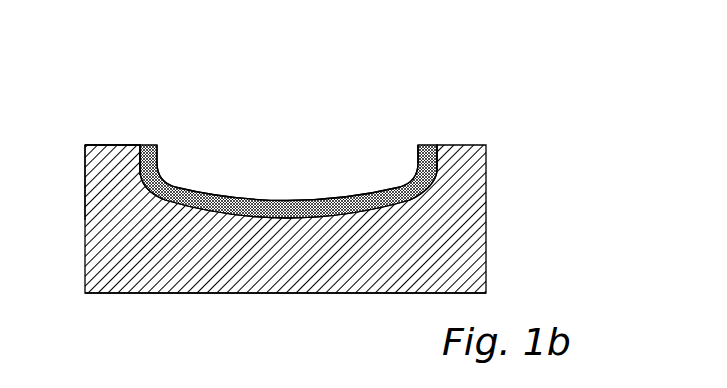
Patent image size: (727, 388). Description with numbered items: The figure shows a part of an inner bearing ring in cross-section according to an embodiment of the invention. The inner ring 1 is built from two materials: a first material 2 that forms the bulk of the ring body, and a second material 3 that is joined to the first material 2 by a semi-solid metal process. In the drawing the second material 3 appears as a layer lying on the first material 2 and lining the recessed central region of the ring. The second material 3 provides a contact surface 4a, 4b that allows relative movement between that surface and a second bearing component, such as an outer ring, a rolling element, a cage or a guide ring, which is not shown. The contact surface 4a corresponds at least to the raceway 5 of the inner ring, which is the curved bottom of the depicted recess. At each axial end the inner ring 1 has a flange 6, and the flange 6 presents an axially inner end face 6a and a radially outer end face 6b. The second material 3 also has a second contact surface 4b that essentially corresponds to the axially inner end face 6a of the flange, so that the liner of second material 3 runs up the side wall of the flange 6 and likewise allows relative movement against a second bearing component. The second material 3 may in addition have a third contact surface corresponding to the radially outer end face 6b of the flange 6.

The inner ring 1 is at (275, 185).
The first material 2 is at (468, 223).
The second material 3 is at (267, 218).
The contact surface 4a is at (188, 190).
The second contact surface 4b is at (418, 165).
The raceway 5 is at (310, 200).
The flange 6 is at (97, 178).
The axially inner end face 6a is at (158, 157).
The radially outer end face 6b is at (115, 144).